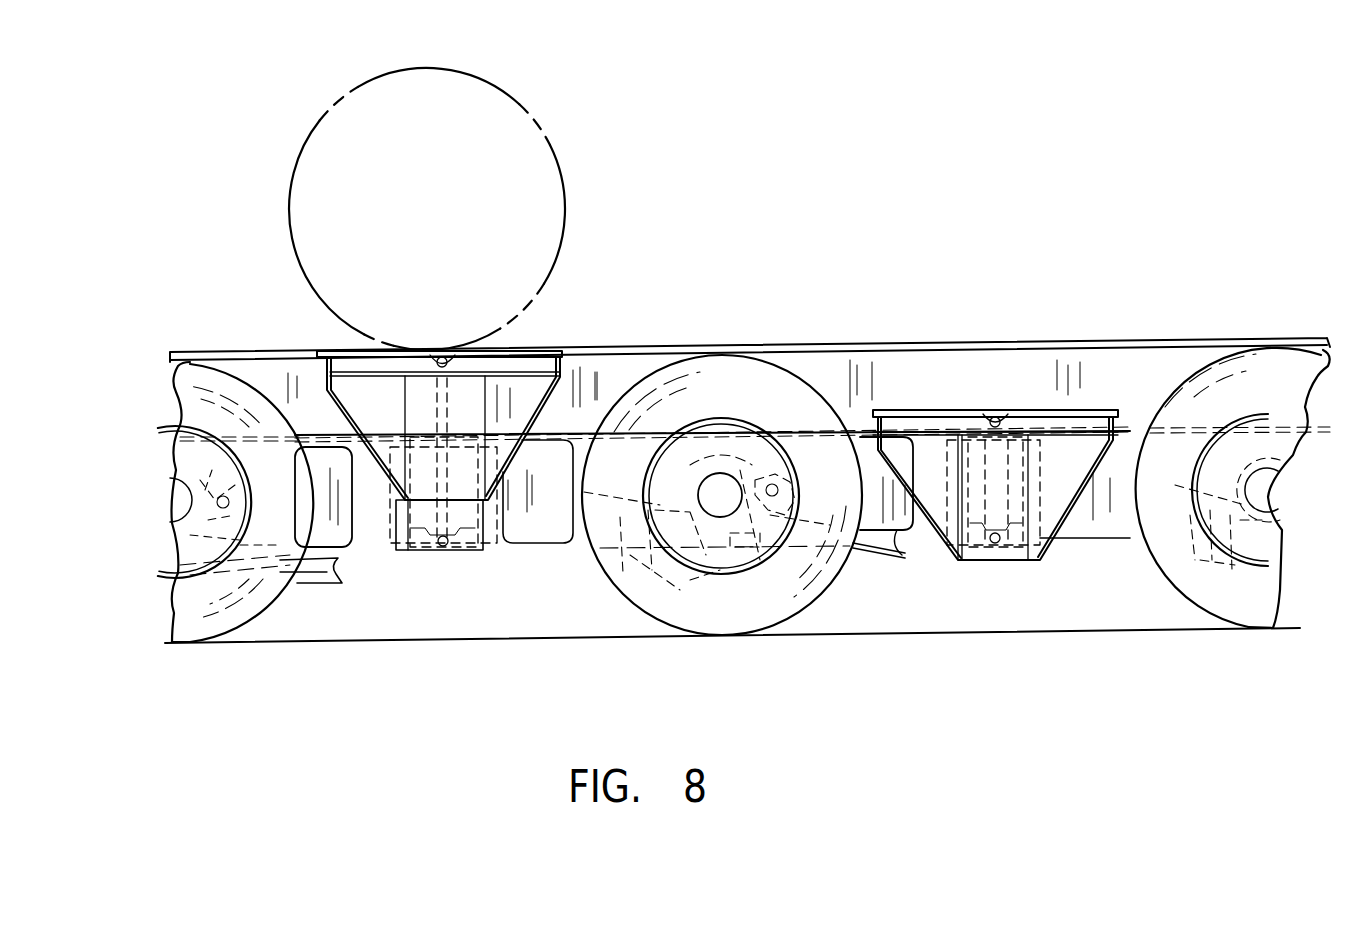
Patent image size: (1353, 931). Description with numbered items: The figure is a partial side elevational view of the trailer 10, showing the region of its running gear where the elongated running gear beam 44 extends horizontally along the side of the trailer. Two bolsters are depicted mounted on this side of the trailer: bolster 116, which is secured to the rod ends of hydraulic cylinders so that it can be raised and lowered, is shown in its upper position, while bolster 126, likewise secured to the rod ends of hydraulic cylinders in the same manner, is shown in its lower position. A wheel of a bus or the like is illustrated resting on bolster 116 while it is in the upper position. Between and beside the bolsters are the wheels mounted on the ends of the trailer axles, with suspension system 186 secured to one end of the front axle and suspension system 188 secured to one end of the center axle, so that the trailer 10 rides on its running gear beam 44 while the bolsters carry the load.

The trailer 10 is at (762, 220).
The running gear beam 44 is at (822, 345).
The bolster 116 is at (541, 379).
The bolster 126 is at (1034, 396).
The suspension system 186 is at (363, 551).
The suspension system 188 is at (884, 566).